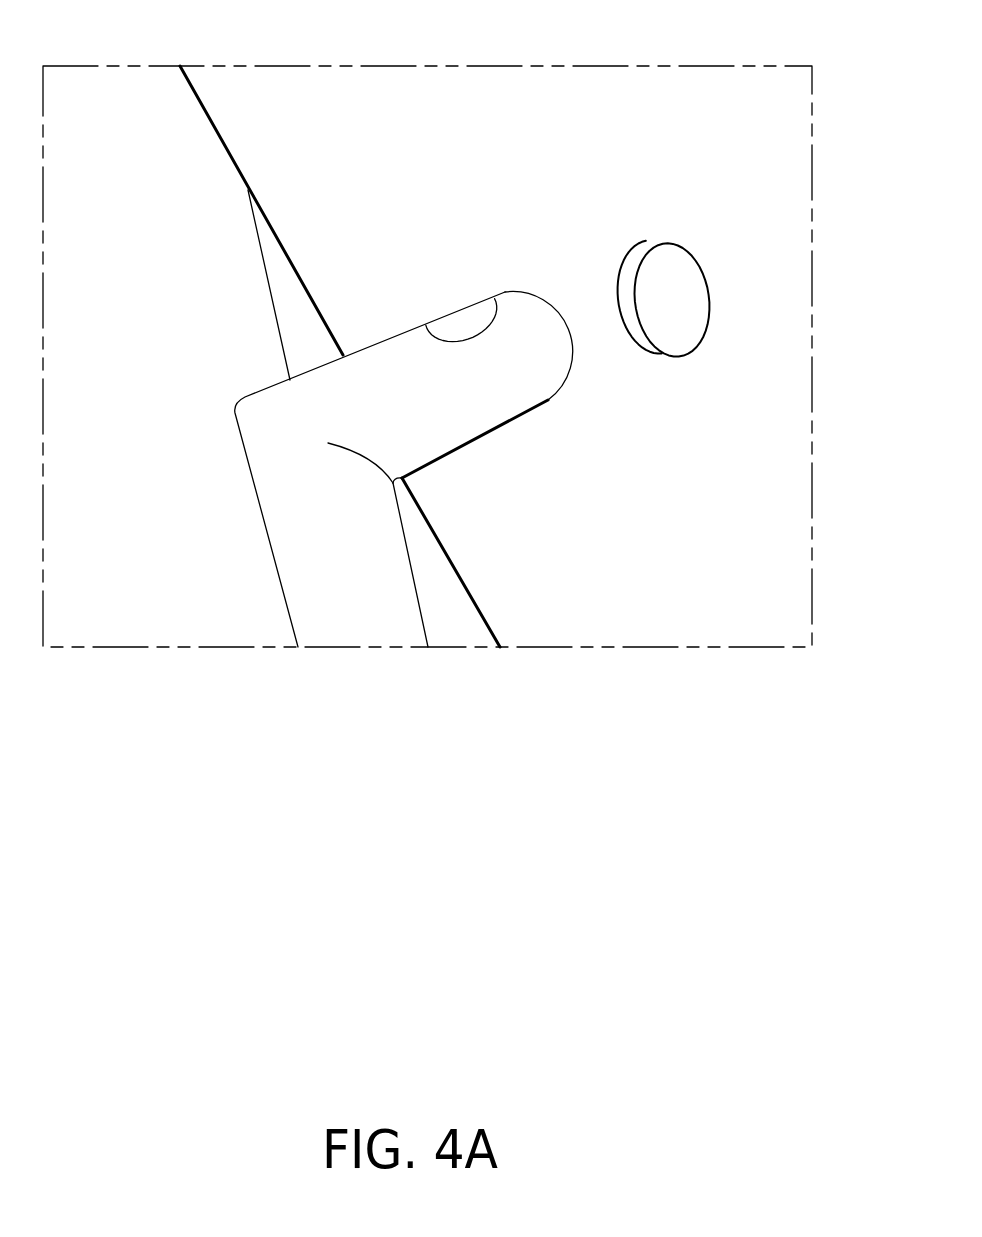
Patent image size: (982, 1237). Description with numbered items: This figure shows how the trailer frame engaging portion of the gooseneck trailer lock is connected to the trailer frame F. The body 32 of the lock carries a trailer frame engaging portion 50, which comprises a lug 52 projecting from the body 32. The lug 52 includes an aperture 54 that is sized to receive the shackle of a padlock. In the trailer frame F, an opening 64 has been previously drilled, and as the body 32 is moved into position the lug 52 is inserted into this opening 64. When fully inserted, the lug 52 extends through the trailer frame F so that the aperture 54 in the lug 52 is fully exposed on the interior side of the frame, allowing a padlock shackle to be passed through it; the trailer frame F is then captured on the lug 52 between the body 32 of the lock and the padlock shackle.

The trailer frame F is at (560, 115).
The body 32 is at (333, 593).
The trailer frame engaging portion 50 is at (368, 429).
The lug 52 is at (520, 373).
The aperture 54 is at (463, 323).
The opening 64 is at (687, 320).